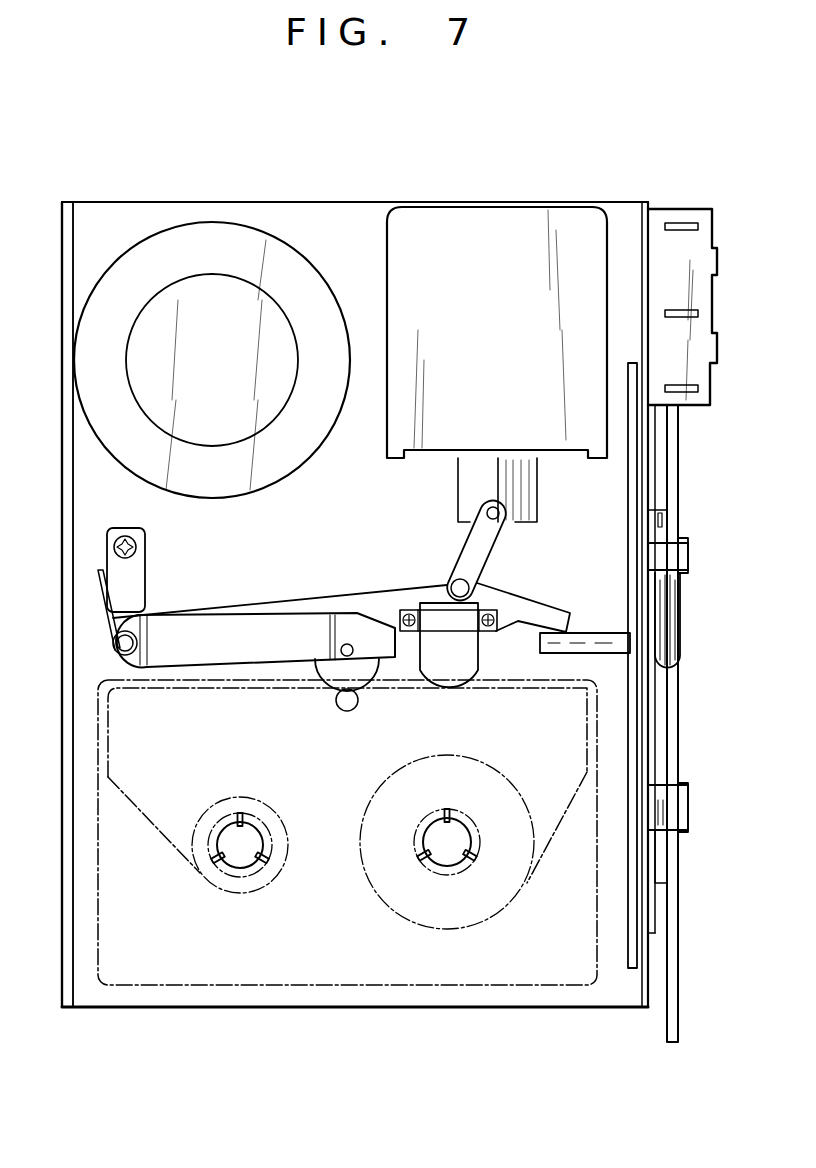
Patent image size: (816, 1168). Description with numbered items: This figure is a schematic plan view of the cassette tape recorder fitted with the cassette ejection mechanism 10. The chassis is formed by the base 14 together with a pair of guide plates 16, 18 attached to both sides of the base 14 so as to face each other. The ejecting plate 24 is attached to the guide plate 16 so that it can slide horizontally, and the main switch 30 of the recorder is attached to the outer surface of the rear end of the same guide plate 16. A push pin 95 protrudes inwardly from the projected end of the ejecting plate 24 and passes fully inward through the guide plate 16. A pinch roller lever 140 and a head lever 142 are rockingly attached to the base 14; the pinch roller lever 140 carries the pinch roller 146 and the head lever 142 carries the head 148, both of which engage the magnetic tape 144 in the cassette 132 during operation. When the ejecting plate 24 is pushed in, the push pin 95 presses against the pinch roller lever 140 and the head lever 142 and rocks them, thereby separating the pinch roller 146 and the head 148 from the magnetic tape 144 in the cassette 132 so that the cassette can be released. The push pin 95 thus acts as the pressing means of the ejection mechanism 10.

The cassette ejection mechanism 10 is at (443, 189).
The base 14 is at (361, 211).
The guide plate 16 is at (648, 1002).
The guide plate 18 is at (62, 841).
The ejecting plate 24 is at (678, 740).
The main switch 30 is at (712, 261).
The push pin 95 is at (598, 634).
The cassette 132 is at (300, 977).
The pinch roller lever 140 is at (240, 618).
The head lever 142 is at (313, 597).
The magnetic tape 144 is at (199, 688).
The pinch roller 146 is at (320, 686).
The head 148 is at (478, 652).